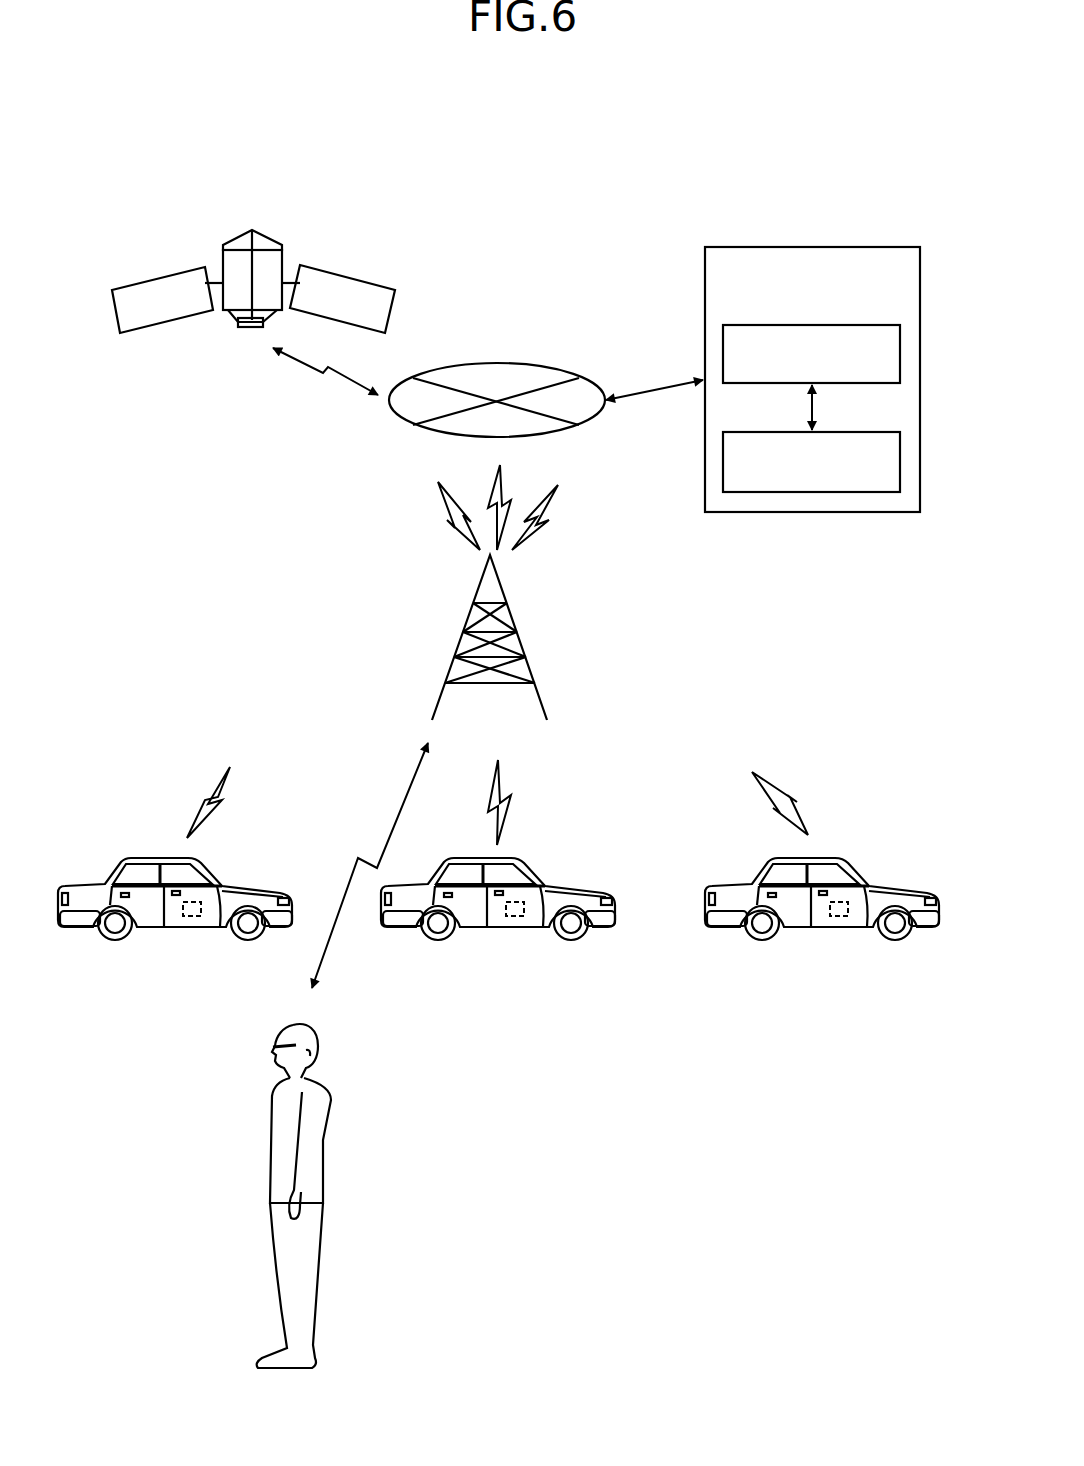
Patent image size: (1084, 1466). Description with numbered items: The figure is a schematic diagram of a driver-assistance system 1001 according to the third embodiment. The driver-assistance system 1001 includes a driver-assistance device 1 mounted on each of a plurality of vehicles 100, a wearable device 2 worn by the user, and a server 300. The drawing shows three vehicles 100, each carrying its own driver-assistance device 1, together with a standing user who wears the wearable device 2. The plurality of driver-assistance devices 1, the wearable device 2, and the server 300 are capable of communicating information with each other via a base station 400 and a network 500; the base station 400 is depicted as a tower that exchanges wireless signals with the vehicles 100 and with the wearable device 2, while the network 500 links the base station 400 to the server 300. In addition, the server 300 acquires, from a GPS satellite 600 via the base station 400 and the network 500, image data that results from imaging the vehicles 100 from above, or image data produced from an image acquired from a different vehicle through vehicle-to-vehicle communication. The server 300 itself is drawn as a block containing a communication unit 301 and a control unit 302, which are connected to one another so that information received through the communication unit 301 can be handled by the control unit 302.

The driver-assistance system 1001 is at (756, 93).
The GPS satellite 600 is at (266, 232).
The network 500 is at (499, 364).
The server 300 is at (852, 247).
The communication unit 301 is at (837, 325).
The control unit 302 is at (837, 433).
The base station 400 is at (505, 590).
The vehicle 100 is at (243, 889).
The driver-assistance device 1 is at (196, 916).
The wearable device 2 is at (272, 1042).